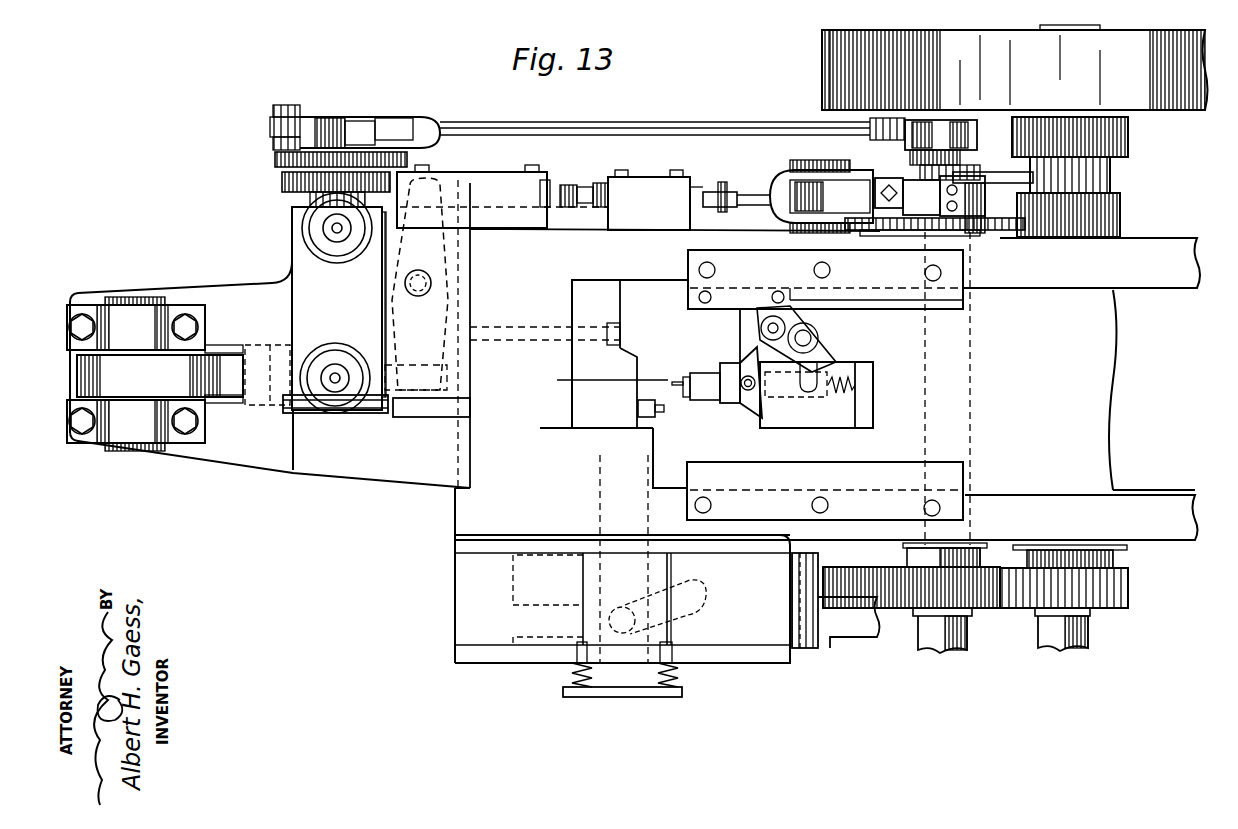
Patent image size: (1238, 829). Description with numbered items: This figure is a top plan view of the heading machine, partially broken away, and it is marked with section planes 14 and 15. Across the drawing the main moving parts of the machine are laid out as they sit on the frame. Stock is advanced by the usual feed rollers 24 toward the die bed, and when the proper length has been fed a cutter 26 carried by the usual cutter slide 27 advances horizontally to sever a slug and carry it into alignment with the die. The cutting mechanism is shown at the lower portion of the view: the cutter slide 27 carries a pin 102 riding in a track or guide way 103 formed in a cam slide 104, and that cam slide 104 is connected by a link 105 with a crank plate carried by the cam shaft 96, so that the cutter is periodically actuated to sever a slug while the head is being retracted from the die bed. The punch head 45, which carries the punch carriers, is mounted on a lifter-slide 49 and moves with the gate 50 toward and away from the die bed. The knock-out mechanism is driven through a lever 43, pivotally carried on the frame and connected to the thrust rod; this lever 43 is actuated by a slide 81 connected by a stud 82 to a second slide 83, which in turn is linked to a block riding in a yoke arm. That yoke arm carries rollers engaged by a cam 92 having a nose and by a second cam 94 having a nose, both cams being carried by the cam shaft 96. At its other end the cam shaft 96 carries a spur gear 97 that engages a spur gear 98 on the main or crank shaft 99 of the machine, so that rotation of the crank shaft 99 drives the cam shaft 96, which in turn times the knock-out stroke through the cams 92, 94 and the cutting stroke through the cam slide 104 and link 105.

The section line 14- 14 is at (145, 375).
The section line 15- 15 is at (277, 187).
The feed rollers 24 is at (300, 412).
The cutter 26 is at (637, 422).
The cutter slide 27 is at (640, 418).
The lever 43 is at (397, 327).
The head 45 is at (726, 366).
The lifter-slide 49 is at (745, 400).
The gate 50 is at (812, 418).
The slide 81 is at (470, 190).
The stud 82 is at (615, 190).
The second slide 83 is at (698, 190).
The cam 92 is at (962, 178).
The cam 94 is at (925, 233).
The cam shaft 96 is at (933, 650).
The spur gear 97 is at (975, 600).
The spur gear 98 is at (1123, 588).
The main or crank shaft 99 is at (1060, 650).
The pin 102 is at (620, 607).
The track or guide way 103 is at (675, 613).
The cam slide 104 is at (750, 643).
The link 105 is at (852, 625).